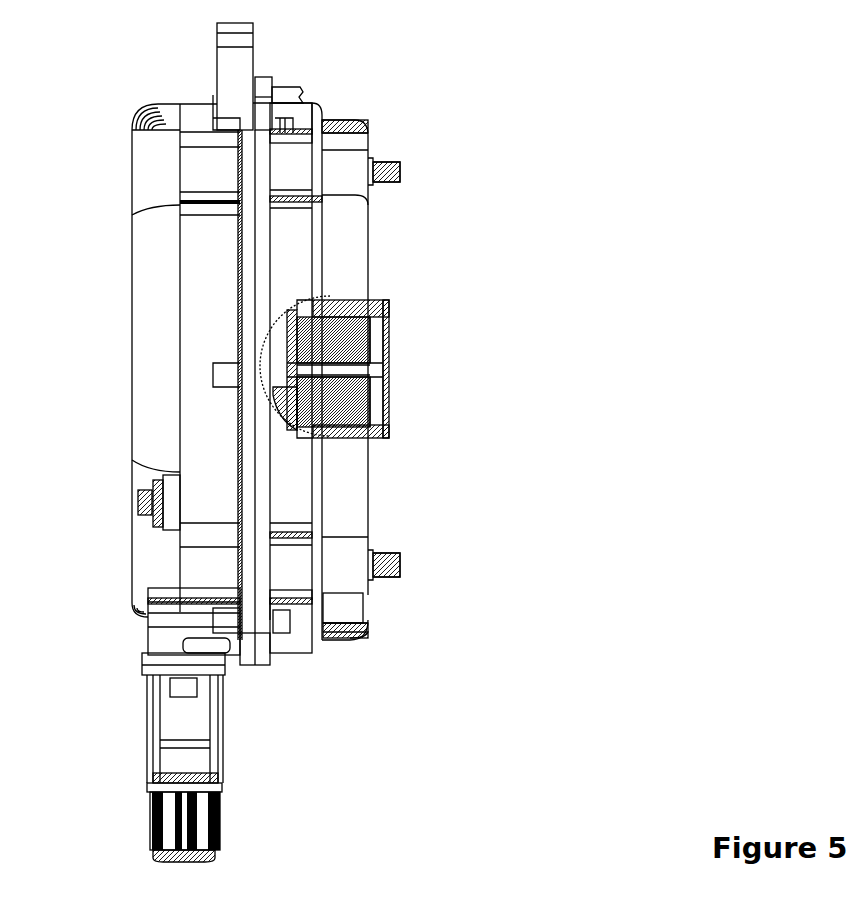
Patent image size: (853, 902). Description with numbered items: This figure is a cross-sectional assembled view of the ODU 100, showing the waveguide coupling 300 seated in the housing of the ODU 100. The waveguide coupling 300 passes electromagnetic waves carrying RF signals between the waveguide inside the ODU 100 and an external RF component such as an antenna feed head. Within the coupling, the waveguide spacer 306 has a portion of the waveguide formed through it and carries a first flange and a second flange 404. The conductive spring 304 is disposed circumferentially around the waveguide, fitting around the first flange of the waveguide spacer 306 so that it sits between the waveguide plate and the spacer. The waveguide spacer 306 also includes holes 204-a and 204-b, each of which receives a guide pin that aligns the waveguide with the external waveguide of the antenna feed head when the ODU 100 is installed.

The ODU 100 is at (103, 64).
The waveguide coupling 300 is at (283, 383).
The conductive spring 304 is at (297, 303).
The second flange 404 is at (355, 310).
The hole 204-a is at (376, 330).
The hole 204-b is at (376, 414).
The waveguide spacer 306 is at (338, 425).